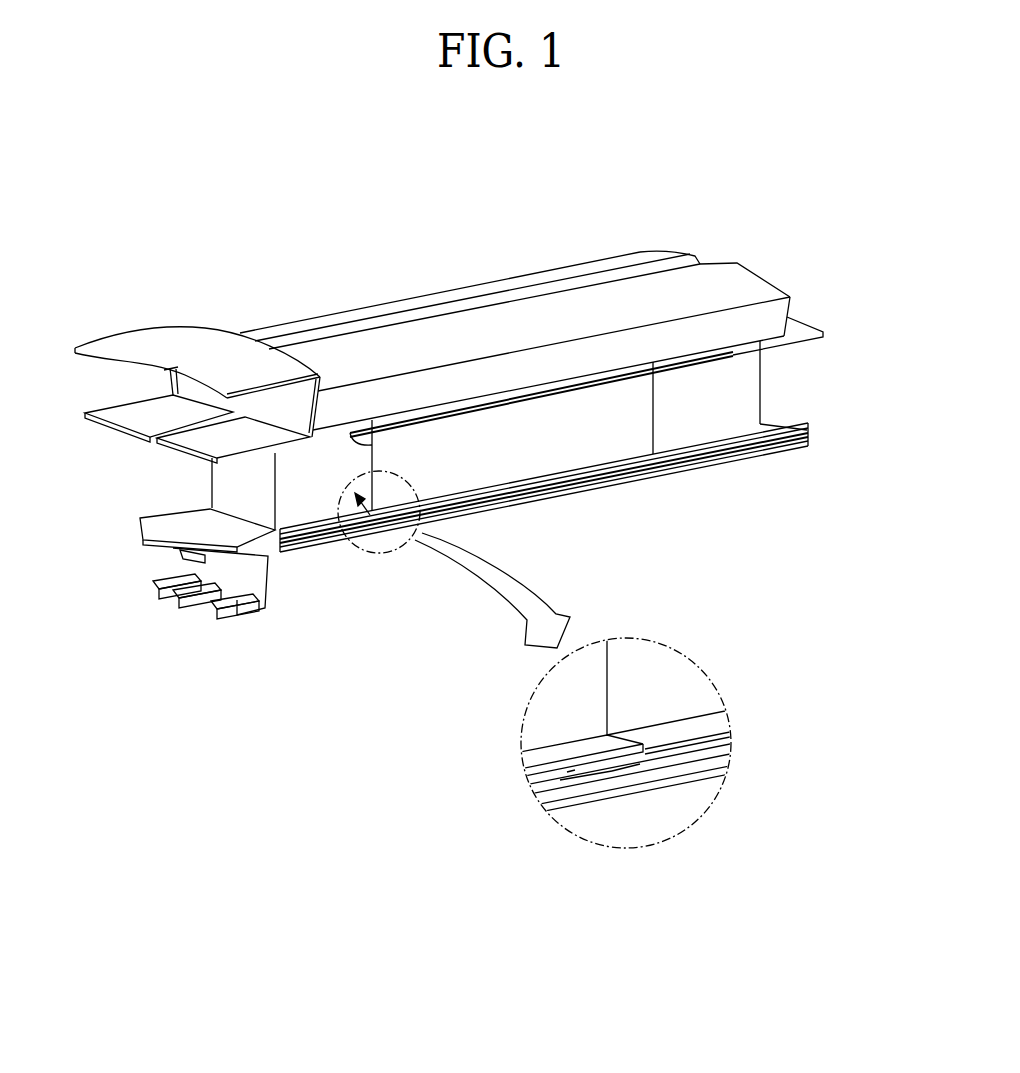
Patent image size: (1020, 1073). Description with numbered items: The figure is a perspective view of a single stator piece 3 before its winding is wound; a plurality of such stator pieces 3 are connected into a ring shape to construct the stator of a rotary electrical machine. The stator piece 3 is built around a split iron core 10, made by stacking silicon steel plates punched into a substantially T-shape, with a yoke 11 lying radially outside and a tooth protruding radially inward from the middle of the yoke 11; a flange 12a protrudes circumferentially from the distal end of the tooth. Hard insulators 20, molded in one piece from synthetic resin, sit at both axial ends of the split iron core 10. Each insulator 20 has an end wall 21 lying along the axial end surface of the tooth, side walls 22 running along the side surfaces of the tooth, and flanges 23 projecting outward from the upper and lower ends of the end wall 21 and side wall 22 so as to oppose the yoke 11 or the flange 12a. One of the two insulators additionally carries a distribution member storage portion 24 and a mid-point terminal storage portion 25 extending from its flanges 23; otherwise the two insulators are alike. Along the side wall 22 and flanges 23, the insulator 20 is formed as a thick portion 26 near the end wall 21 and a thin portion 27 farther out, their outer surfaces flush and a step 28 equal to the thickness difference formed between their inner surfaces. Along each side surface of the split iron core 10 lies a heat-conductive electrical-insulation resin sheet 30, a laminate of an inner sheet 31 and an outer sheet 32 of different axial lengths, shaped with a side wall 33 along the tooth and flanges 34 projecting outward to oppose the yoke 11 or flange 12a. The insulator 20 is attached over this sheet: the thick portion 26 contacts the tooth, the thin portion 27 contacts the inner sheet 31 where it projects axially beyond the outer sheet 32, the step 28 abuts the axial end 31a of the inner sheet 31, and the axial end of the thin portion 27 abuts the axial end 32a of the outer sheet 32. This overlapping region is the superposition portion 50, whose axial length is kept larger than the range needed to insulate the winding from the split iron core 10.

The stator piece 3 is at (547, 250).
The split iron core 10 is at (481, 283).
The yoke 11 is at (753, 280).
The flange 12a is at (590, 490).
The insulator 20 is at (147, 330).
The end wall 21 is at (220, 478).
The side wall 22 is at (312, 523).
The flange 23 is at (130, 413).
The distribution member storage portion 24 is at (180, 382).
The mid-point terminal storage portion 25 is at (227, 573).
The thick portion 26 is at (733, 403).
The thin portion 27 is at (687, 427).
The step 28 is at (613, 772).
The heat-conductive electrical-insulation resin sheet 30 is at (637, 458).
The inner sheet 31 is at (613, 770).
The axial end of inner sheet 31a is at (567, 772).
The outer sheet 32 is at (533, 472).
The axial end of outer sheet 32a is at (350, 433).
The side wall 33 is at (480, 473).
The flange 34 is at (625, 442).
The superposition portion 50 is at (372, 548).